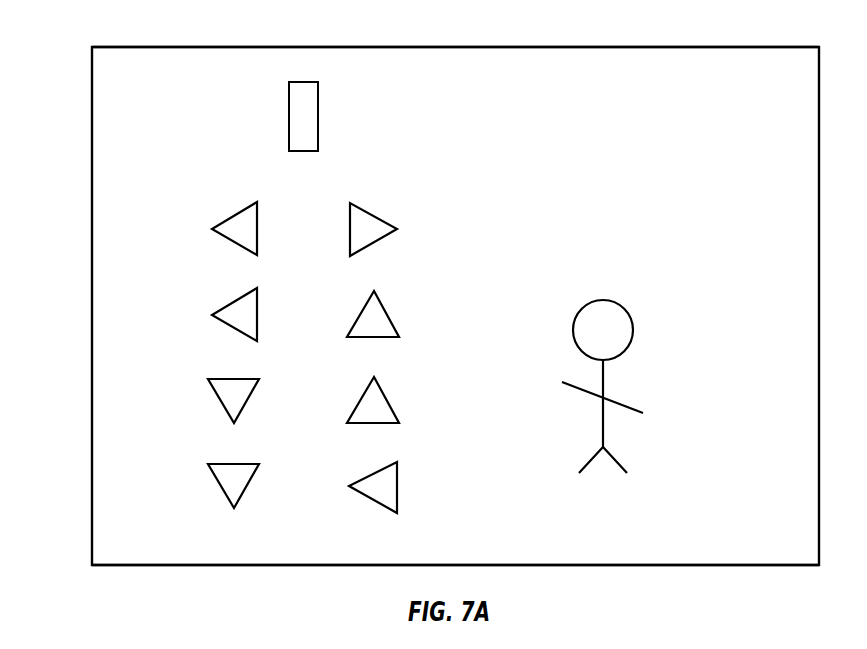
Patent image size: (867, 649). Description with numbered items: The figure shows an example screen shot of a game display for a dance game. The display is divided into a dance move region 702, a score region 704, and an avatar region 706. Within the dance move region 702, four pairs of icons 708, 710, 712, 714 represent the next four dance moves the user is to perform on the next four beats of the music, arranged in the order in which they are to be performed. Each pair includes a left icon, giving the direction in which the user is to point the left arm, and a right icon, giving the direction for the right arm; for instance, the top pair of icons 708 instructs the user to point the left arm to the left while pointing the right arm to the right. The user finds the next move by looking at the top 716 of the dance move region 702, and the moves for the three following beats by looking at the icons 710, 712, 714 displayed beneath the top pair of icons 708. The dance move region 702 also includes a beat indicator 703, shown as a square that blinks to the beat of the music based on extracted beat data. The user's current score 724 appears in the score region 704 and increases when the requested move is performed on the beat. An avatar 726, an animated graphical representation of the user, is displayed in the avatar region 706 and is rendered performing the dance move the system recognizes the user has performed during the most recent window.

The dance move region 702 is at (124, 303).
The beat indicator 703 is at (318, 96).
The score region 704 is at (672, 60).
The avatar region 706 is at (757, 548).
The top pair of icons 708 is at (232, 215).
The pair of icons 710 is at (232, 303).
The pair of icons 712 is at (219, 378).
The pair of icons 714 is at (219, 463).
The top of the dance move region 716 is at (238, 149).
The score 724 is at (665, 125).
The avatar 726 is at (592, 302).